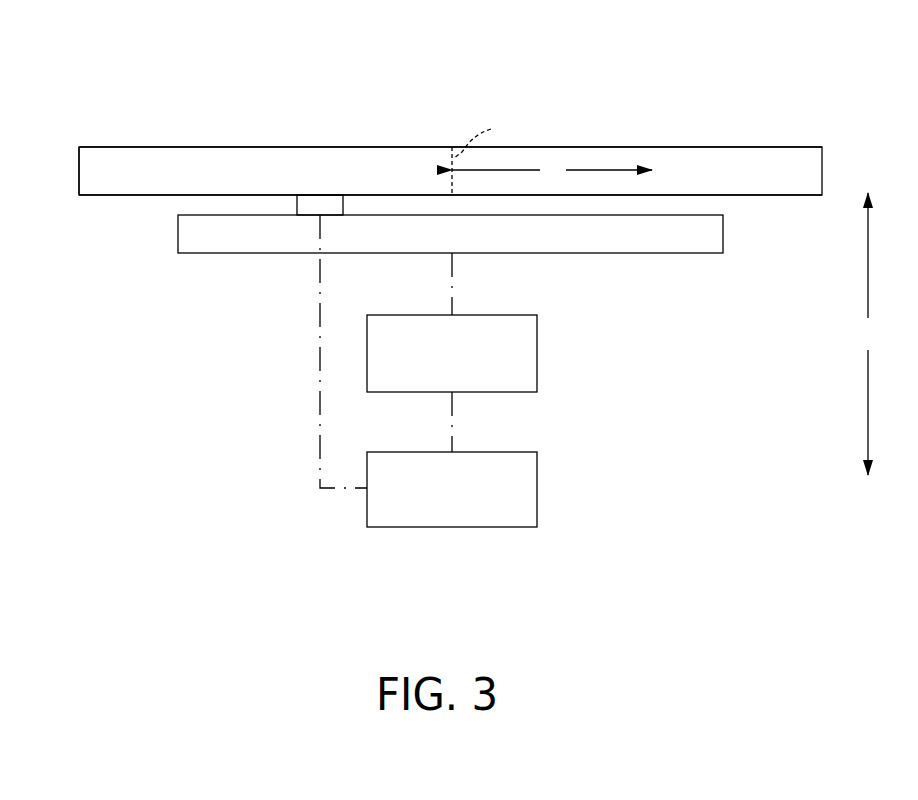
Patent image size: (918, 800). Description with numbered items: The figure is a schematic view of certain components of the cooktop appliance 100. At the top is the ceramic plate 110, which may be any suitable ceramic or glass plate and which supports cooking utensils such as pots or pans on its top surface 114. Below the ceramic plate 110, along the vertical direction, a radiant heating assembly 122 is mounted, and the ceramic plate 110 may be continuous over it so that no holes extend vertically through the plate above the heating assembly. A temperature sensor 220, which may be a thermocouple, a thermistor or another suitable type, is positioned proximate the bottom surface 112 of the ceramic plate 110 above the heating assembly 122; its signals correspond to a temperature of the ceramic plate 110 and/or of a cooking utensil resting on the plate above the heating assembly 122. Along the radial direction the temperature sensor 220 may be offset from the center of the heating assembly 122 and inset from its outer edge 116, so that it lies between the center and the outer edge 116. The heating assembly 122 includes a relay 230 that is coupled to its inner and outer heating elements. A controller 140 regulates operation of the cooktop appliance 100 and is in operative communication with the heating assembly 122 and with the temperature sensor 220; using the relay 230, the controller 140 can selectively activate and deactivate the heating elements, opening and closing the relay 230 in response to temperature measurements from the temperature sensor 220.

The cooktop appliance 100 is at (668, 70).
The ceramic plate 110 is at (793, 170).
The bottom surface 112 is at (142, 195).
The top surface 114 is at (193, 145).
The outer edge 116 is at (79, 170).
The heating assembly 122 is at (233, 240).
The temperature sensor 220 is at (318, 207).
The relay 230 is at (452, 353).
The controller 140 is at (452, 489).